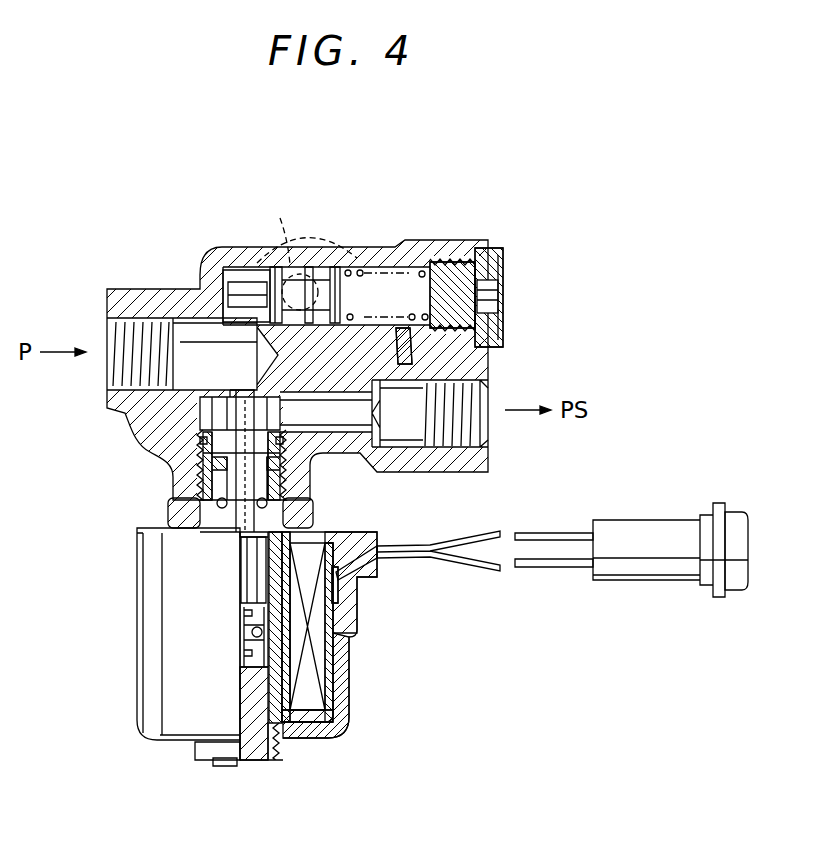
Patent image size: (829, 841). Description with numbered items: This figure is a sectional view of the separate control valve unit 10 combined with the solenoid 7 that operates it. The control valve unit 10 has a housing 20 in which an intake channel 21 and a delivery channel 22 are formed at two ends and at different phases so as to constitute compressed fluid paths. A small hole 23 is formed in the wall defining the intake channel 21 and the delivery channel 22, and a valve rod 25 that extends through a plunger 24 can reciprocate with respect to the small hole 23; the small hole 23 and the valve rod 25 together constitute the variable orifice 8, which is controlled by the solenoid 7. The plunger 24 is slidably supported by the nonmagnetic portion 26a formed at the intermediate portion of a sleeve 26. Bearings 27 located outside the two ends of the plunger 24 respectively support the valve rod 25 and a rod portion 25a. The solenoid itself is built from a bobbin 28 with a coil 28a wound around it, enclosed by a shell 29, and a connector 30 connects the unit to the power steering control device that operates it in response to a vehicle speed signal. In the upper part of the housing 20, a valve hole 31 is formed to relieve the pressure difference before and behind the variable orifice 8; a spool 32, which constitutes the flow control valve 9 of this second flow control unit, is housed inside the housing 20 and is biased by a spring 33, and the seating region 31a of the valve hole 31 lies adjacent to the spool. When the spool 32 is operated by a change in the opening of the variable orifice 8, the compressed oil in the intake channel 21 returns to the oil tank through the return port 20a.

The control valve unit 10 is at (176, 232).
The housing 20 is at (463, 242).
The return port 20a is at (290, 257).
The spool 32 is at (332, 268).
The valve hole 31 is at (402, 310).
The spring 33 is at (423, 267).
The flow control valve 9 is at (347, 297).
The valve seat 31a is at (413, 347).
The intake channel 21 is at (123, 368).
The small hole 23 is at (240, 397).
The valve rod 25 is at (254, 406).
The variable orifice 8 is at (232, 402).
The delivery channel 22 is at (477, 427).
The sleeve 26 is at (284, 482).
The bearings 27 is at (282, 503).
The nonmagnetic portion 26a is at (272, 558).
The plunger 24 is at (246, 588).
The solenoid 7 is at (140, 647).
The rod portion 25a is at (243, 652).
The coil 28a is at (310, 683).
The shell 29 is at (346, 727).
The bobbin 28 is at (300, 740).
The connector 30 is at (660, 563).